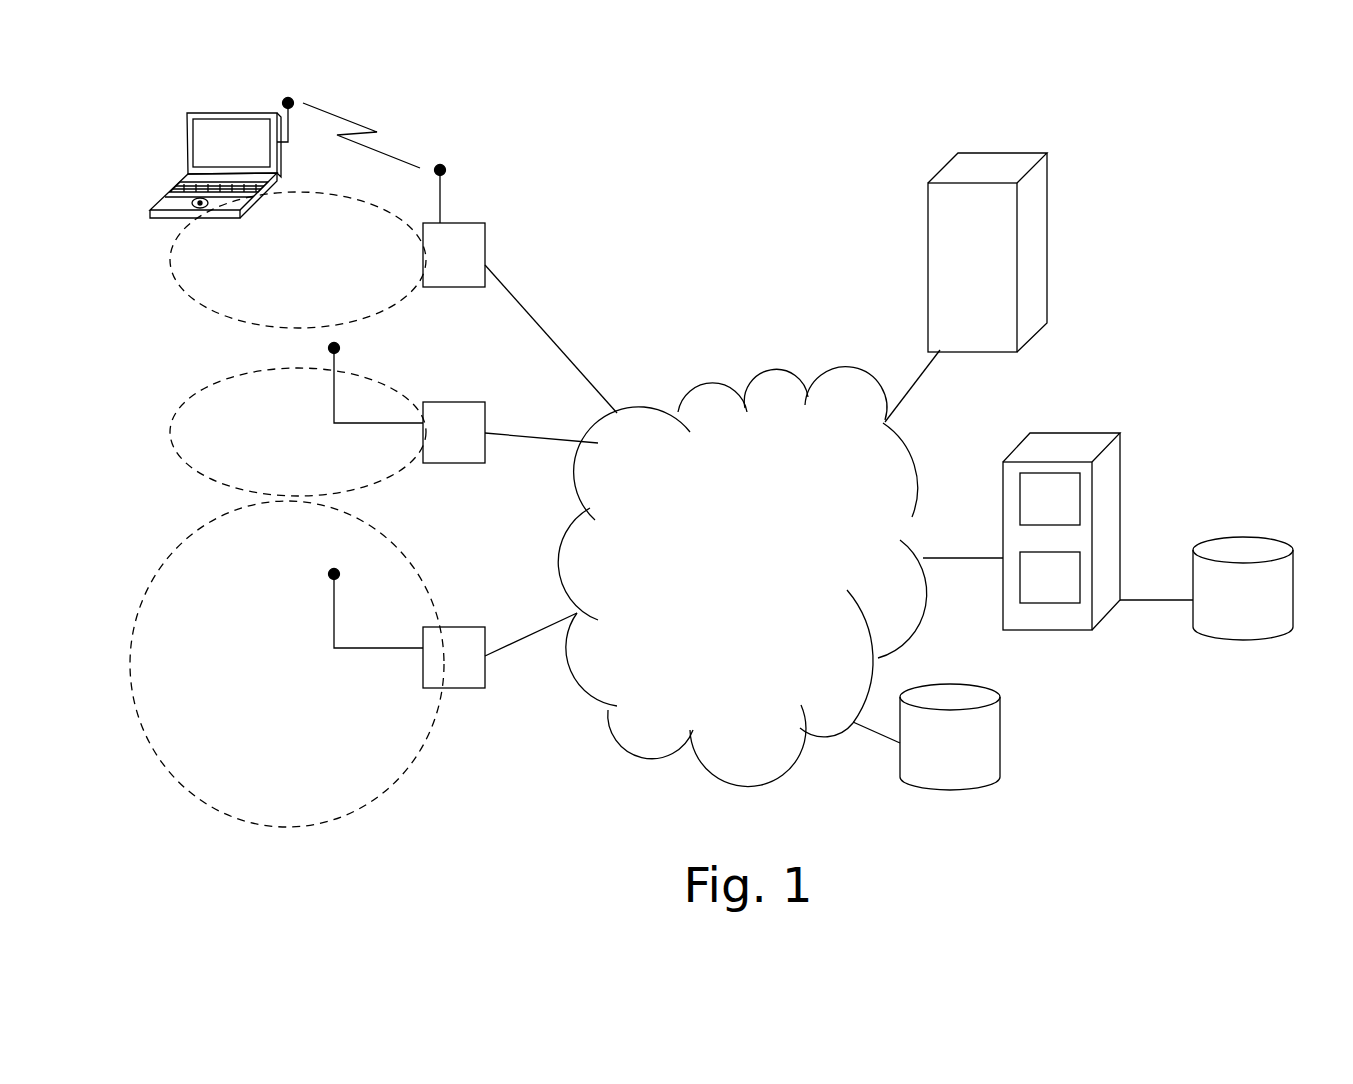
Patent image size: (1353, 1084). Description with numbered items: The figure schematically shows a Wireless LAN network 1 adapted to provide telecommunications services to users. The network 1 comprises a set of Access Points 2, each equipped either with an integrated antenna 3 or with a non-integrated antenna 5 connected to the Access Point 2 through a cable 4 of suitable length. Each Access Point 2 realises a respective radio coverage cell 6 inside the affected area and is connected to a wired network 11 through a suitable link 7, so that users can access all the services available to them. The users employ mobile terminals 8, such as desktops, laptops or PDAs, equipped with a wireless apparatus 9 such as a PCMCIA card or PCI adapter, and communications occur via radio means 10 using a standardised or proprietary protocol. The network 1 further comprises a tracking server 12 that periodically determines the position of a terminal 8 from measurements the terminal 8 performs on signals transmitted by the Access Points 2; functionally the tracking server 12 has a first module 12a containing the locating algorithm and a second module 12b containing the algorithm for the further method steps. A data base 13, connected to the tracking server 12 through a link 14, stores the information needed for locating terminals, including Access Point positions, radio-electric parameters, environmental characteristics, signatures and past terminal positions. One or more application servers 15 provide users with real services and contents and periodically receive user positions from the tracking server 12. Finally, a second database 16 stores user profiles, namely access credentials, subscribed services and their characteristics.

The Wireless LAN network 1 is at (700, 268).
The Access Point 2 is at (448, 277).
The integrated antenna 3 is at (438, 198).
The cable 4 is at (352, 427).
The non-integrated antenna 5 is at (272, 650).
The radio coverage cell 6 is at (170, 262).
The link 7 is at (535, 320).
The mobile terminal 8 is at (205, 162).
The wireless apparatus 9 is at (180, 198).
The radio means 10 is at (353, 133).
The wired network 11 is at (660, 722).
The tracking server 12 is at (1062, 560).
The first module 12a is at (1068, 490).
The second module 12b is at (1072, 573).
The data base 13 is at (1233, 643).
The link 14 is at (1148, 608).
The application server 15 is at (1050, 300).
The second database 16 is at (950, 787).